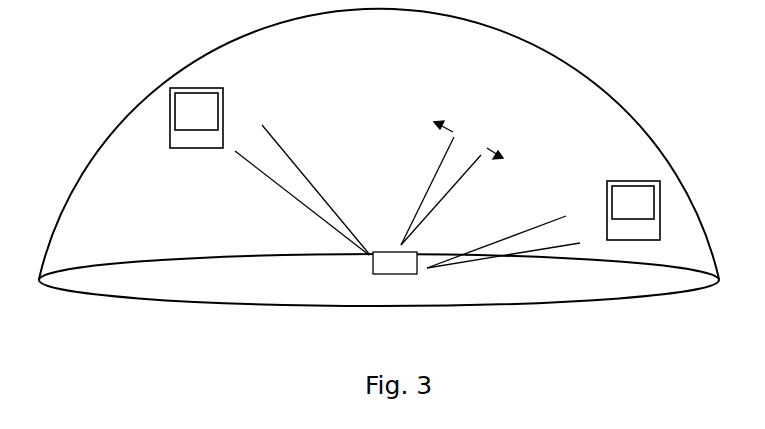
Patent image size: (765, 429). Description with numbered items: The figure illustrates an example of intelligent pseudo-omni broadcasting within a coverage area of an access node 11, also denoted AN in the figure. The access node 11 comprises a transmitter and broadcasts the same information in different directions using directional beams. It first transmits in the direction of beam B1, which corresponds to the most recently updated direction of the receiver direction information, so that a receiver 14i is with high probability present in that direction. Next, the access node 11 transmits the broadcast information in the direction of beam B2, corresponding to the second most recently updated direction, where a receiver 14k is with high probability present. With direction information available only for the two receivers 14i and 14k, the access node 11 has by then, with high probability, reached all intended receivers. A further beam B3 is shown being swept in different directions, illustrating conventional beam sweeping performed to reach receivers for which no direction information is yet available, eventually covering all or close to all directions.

The access node 11 is at (373, 273).
The access node AN is at (395, 263).
The beam B1 is at (511, 240).
The beam B2 is at (301, 187).
The beam B3 is at (452, 183).
The receiver 14k is at (196, 118).
The receiver 14i is at (633, 210).